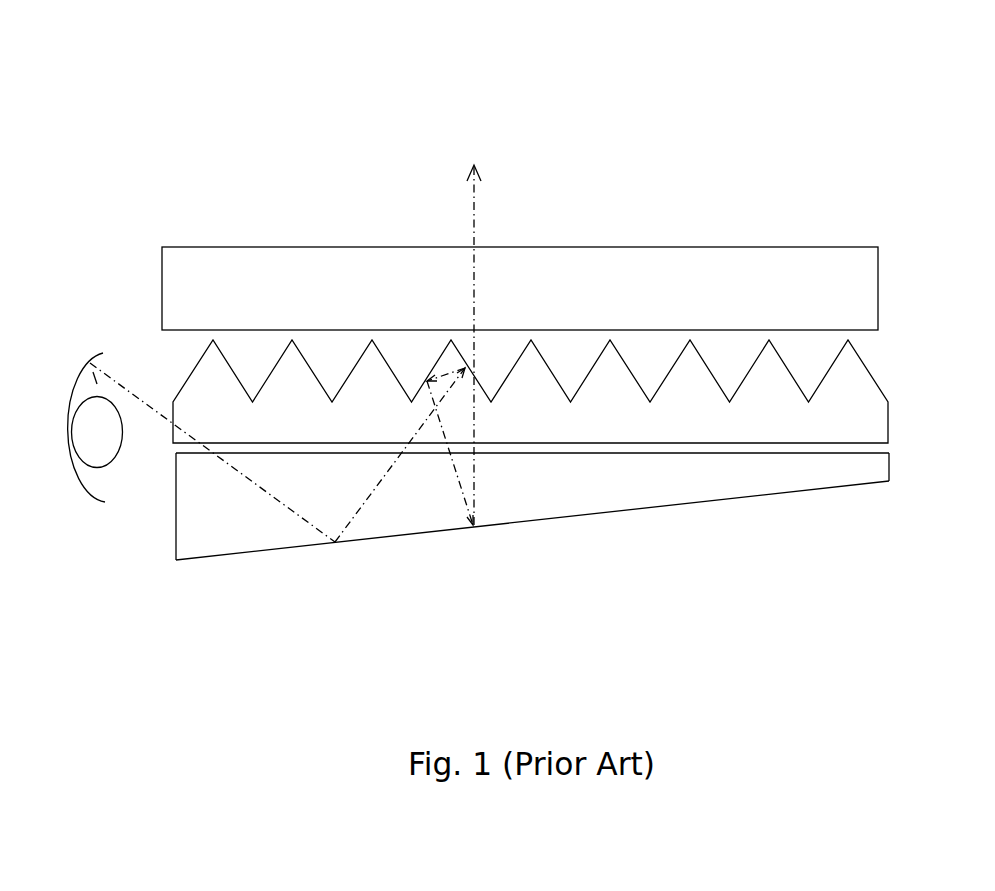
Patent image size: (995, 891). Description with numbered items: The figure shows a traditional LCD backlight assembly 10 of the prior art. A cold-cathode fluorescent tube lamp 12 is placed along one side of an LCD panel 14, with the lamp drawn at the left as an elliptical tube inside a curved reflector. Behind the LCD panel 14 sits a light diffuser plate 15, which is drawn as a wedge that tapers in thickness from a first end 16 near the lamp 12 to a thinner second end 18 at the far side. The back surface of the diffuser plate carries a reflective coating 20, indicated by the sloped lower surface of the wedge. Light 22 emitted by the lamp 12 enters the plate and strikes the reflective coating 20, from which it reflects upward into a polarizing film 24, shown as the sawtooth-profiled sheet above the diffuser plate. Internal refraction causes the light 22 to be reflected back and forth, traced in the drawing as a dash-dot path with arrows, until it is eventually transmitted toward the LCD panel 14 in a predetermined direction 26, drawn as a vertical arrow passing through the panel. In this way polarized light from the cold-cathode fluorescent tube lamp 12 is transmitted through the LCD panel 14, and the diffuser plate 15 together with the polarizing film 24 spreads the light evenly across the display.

The LCD backlight assembly 10 is at (798, 67).
The cold-cathode fluorescent tube lamp 12 is at (90, 433).
The LCD panel 14 is at (805, 277).
The light diffuser plate 15 is at (501, 502).
The first end 16 is at (188, 525).
The second end 18 is at (848, 473).
The reflective coating 20 is at (723, 487).
The light 22 is at (129, 400).
The polarizing film 24 is at (858, 397).
The predetermined direction 26 is at (474, 207).